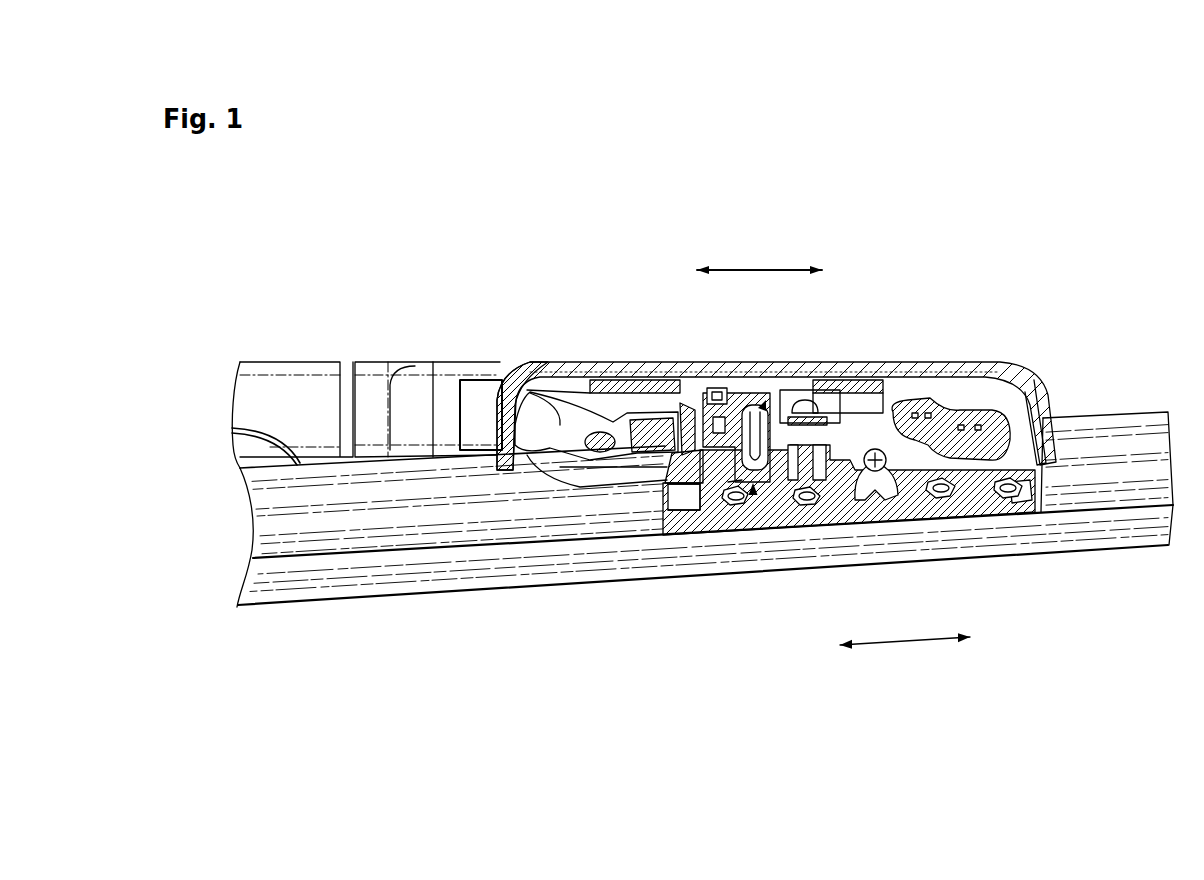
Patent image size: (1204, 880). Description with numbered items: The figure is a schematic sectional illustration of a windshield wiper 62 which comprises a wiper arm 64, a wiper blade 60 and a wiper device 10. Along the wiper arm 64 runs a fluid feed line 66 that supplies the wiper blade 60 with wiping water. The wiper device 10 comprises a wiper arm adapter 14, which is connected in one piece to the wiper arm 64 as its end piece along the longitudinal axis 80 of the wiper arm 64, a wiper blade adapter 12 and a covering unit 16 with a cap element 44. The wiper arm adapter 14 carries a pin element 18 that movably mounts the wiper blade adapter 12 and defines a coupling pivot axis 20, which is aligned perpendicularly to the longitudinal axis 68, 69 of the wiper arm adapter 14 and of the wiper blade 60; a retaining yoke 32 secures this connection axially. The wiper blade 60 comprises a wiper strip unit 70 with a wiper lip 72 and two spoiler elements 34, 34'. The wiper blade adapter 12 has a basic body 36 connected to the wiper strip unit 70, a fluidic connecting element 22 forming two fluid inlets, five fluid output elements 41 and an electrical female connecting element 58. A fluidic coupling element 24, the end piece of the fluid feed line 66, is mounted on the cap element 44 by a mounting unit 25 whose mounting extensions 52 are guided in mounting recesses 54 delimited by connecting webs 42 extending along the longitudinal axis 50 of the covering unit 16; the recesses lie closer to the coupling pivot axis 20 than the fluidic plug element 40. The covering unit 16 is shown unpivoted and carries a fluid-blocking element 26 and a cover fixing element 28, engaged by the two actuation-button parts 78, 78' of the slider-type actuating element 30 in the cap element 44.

The wiper device 10 is at (1075, 262).
The wiper blade adapter 12 is at (790, 522).
The wiper arm adapter 14 is at (555, 430).
The covering unit 16 is at (410, 270).
The pin element 18 is at (872, 480).
The coupling pivot axis 20 is at (978, 462).
The fluidic connecting element 22 is at (700, 497).
The fluidic coupling element 24 is at (745, 395).
The mounting unit 25 is at (754, 496).
The fluid-blocking element 26 is at (660, 470).
The cover fixing element 28 is at (803, 395).
The actuating element 30 is at (480, 400).
The retaining yoke 32 is at (835, 395).
The spoiler element 34 is at (702, 530).
The spoiler element 34' is at (1107, 457).
The basic body 36 is at (797, 525).
The fluidic plug element 40 is at (700, 408).
The fluid output element 41 is at (738, 505).
The connecting web 42 is at (745, 392).
The cap element 44 is at (1002, 363).
The longitudinal axis of the covering unit 50 is at (760, 270).
The mounting extension 52 is at (736, 545).
The mounting recess 54 is at (766, 405).
The electrical female connecting element 58 is at (1020, 505).
The wiper blade 60 is at (1042, 630).
The windshield wiper 62 is at (347, 263).
The wiper arm 64 is at (292, 372).
The fluid feed line 66 is at (533, 425).
The longitudinal axis of the wiper arm adapter 68 is at (760, 270).
The longitudinal axis of the wiper blade 69 is at (905, 648).
The wiper strip unit 70 is at (482, 575).
The wiper lip 72 is at (482, 575).
The actuation-button part 78 is at (428, 377).
The actuation-button part 78' is at (1073, 381).
The longitudinal axis of the wiper arm 80 is at (760, 270).